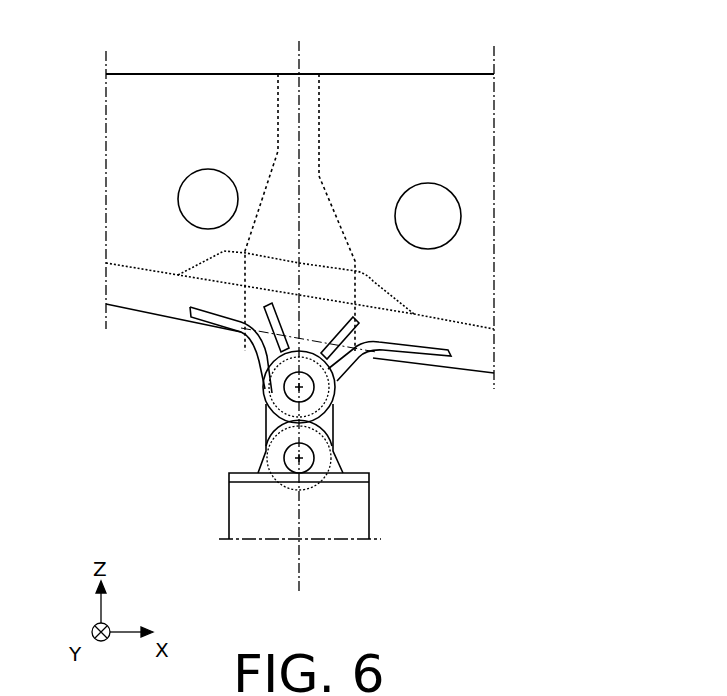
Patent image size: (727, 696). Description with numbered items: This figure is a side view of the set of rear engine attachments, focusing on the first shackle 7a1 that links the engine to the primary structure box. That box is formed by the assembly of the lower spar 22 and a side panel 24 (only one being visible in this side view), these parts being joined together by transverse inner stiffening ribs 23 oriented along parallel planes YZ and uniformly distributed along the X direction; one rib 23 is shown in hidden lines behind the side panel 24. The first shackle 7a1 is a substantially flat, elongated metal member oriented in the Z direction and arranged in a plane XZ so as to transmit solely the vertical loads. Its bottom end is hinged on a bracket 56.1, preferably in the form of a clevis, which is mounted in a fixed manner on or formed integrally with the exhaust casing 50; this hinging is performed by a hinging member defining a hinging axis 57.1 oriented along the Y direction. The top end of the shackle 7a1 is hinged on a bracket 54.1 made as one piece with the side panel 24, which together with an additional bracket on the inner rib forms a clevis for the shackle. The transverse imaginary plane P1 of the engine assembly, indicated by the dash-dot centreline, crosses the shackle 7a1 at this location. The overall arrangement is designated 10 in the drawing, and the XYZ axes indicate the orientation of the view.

The device 10 is at (261, 552).
The lower spar 22 is at (143, 313).
The transverse inner stiffening ribs 23 is at (280, 222).
The side panel 24 is at (388, 115).
The exhaust casing 50 is at (369, 520).
The bracket 54.1 is at (266, 350).
The bracket 56.1 is at (264, 464).
The hinging axis 57.1 is at (301, 455).
The first shackle 7a1 is at (368, 426).
The transverse imaginary plane P1 is at (298, 50).